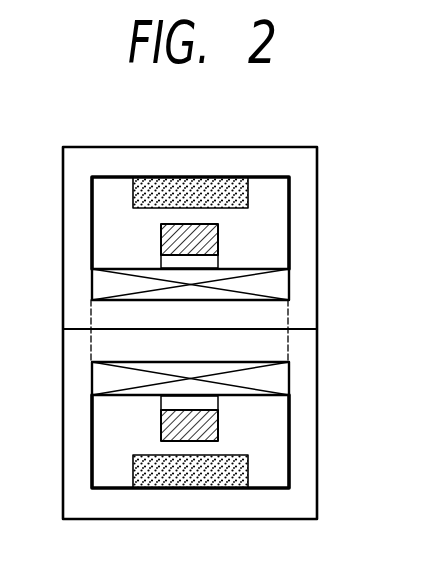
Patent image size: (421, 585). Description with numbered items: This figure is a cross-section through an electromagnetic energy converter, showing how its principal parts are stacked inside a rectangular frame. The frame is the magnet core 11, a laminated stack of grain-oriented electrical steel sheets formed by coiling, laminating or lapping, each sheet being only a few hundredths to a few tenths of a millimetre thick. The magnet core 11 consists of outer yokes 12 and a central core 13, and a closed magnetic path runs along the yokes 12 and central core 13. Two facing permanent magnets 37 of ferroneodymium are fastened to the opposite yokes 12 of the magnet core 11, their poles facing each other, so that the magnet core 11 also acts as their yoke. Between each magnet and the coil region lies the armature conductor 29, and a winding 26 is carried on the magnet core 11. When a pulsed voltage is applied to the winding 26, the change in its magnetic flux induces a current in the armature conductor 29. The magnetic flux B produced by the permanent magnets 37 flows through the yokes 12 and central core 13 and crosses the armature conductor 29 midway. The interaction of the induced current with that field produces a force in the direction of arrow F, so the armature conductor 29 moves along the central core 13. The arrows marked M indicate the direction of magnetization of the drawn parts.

The magnet core 11 is at (314, 138).
The yokes 12 is at (128, 160).
The central core 13 is at (277, 321).
The winding 26 is at (101, 284).
The armature conductor 29 is at (218, 247).
The permanent magnets 37 is at (237, 190).
The magnetization direction M is at (212, 163).
The magnetic flux B is at (150, 215).
The force F is at (276, 417).